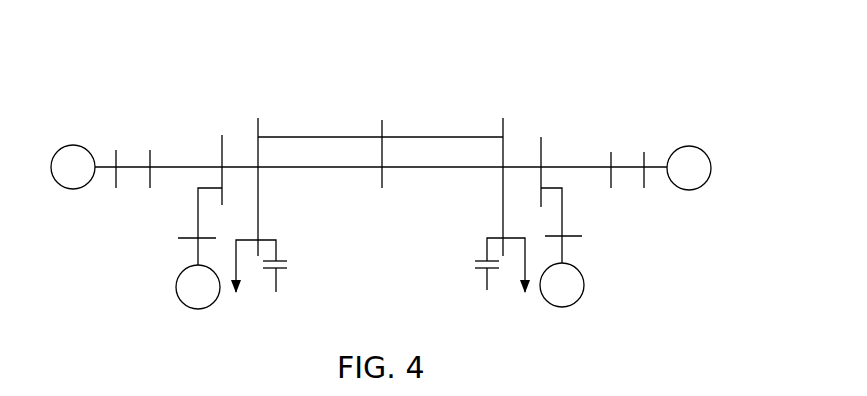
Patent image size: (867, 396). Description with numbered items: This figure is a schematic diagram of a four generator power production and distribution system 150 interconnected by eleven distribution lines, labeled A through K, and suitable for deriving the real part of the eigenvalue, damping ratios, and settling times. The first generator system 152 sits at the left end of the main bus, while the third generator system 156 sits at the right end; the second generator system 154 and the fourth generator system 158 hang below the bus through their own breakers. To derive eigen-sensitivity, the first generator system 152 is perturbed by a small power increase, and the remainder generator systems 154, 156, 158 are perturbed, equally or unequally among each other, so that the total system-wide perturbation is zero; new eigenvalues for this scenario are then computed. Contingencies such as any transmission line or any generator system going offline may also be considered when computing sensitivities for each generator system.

The four generator power production and distribution system 150 is at (486, 61).
The generator system G1 152 is at (71, 144).
The generator system G2 154 is at (176, 287).
The generator system G3 156 is at (688, 146).
The generator system G4 158 is at (585, 285).